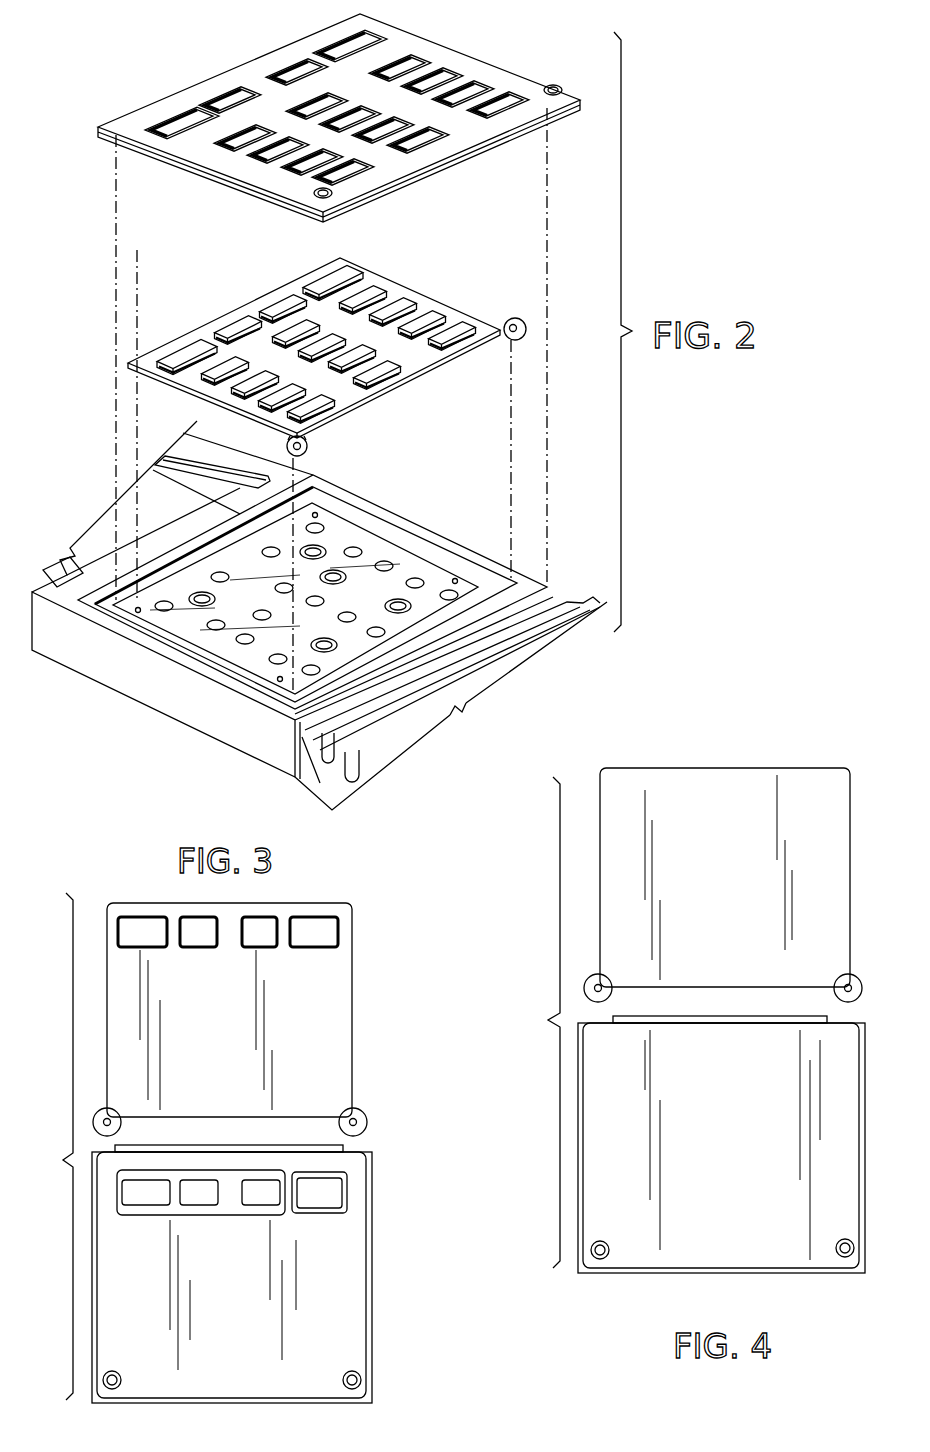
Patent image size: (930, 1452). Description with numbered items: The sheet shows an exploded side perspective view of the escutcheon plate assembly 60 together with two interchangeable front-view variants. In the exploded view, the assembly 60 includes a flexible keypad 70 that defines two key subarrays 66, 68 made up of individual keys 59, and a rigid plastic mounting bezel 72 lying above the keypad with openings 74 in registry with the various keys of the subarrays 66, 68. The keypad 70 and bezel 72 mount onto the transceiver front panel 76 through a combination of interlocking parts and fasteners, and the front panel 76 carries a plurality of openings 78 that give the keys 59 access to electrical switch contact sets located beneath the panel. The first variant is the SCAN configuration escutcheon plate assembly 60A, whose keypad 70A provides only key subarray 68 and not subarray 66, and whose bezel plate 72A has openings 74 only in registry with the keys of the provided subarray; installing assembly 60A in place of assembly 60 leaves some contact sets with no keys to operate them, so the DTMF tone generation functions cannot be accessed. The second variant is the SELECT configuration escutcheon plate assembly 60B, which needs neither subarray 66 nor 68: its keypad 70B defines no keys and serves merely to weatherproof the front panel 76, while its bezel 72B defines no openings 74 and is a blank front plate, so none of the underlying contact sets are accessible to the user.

In FIG. 2, the subarray keys 59 is at (178, 352).
In FIG. 2, the escutcheon plate assembly 60 is at (319, 559).
In FIG. 2, the key subarray 66 is at (329, 340).
In FIG. 2, the key subarray 68 is at (316, 323).
In FIG. 3, the key subarray 68 is at (367, 914).
In FIG. 2, the flexible keypad 70 is at (327, 340).
In FIG. 2, the mounting bezel 72 is at (339, 114).
In FIG. 2, the openings 74 is at (330, 53).
In FIG. 3, the openings 74 is at (338, 1199).
In FIG. 2, the transceiver front panel 76 is at (295, 575).
In FIG. 2, the openings 78 is at (388, 560).
In FIG. 3, the escutcheon plate assembly 60A is at (228, 1146).
In FIG. 3, the keypad 70A is at (266, 1013).
In FIG. 3, the bezel plate 72A is at (264, 1277).
In FIG. 4, the escutcheon plate assembly 60B is at (680, 999).
In FIG. 4, the keypad 70B is at (713, 768).
In FIG. 4, the bezel 72B is at (578, 1187).